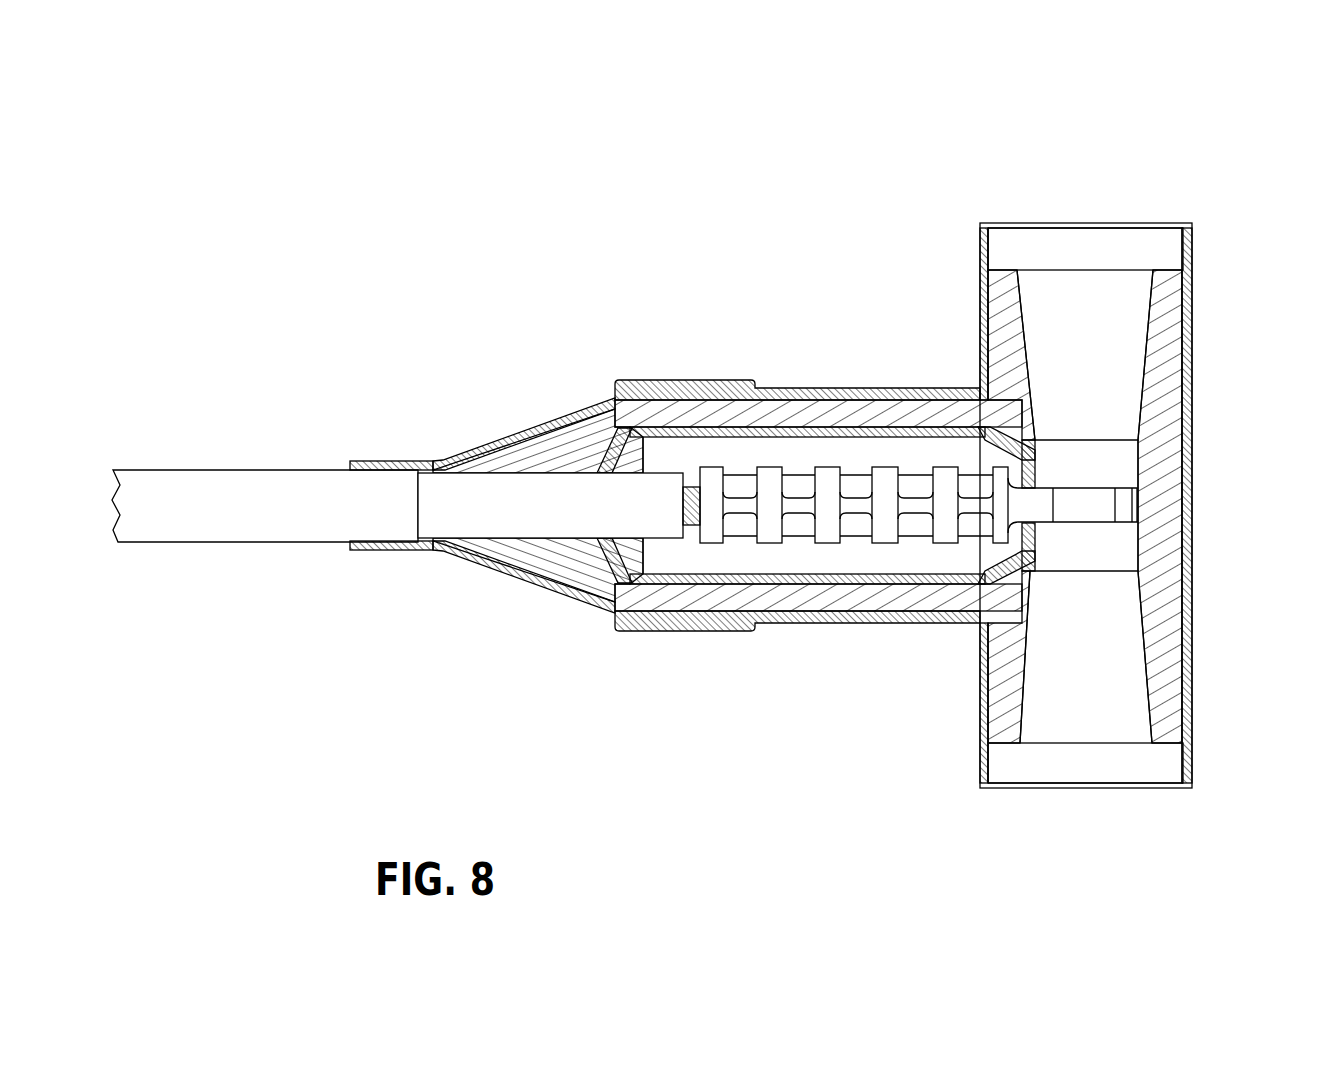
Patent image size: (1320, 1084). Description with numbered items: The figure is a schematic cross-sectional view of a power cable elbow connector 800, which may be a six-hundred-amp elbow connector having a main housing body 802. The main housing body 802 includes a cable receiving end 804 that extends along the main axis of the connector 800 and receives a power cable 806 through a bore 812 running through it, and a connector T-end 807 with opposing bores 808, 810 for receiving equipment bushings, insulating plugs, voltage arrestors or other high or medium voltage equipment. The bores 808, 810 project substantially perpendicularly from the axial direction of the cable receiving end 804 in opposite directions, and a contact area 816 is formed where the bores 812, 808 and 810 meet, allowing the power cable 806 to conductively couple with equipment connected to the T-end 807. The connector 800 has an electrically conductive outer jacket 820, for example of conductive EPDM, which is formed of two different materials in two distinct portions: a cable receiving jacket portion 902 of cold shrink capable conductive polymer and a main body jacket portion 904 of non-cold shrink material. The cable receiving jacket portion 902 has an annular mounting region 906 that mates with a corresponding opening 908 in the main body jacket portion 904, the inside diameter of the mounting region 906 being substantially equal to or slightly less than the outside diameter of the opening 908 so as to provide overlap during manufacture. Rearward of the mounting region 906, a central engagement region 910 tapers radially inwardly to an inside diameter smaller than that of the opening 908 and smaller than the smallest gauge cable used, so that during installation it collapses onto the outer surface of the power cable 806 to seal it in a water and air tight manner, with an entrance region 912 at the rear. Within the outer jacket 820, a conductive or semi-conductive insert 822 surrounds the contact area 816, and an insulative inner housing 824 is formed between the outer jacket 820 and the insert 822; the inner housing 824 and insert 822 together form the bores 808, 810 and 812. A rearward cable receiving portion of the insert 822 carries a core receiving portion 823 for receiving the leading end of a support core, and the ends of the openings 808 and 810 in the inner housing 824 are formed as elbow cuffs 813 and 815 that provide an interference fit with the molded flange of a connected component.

The power cable elbow connector 800 is at (672, 240).
The main housing body 802 is at (652, 513).
The cable receiving end 804 is at (766, 716).
The power cable 806 is at (240, 511).
The connector T-end 807 is at (1220, 450).
The bore 808 is at (1085, 355).
The bore 810 is at (1086, 657).
The bore 812 is at (660, 560).
The elbow cuff 813 is at (1108, 247).
The elbow cuff 815 is at (1032, 755).
The contact area 816 is at (1102, 535).
The outer jacket 820 is at (757, 659).
The conductive insert 822 is at (870, 430).
The core receiving portion 823 is at (607, 465).
The insulative inner housing 824 is at (1002, 680).
The cable receiving jacket portion 902 is at (512, 573).
The main body jacket portion 904 is at (1077, 509).
The annular mounting region 906 is at (727, 380).
The opening 908 is at (717, 618).
The central engagement region 910 is at (402, 547).
The entrance region 912 is at (350, 462).